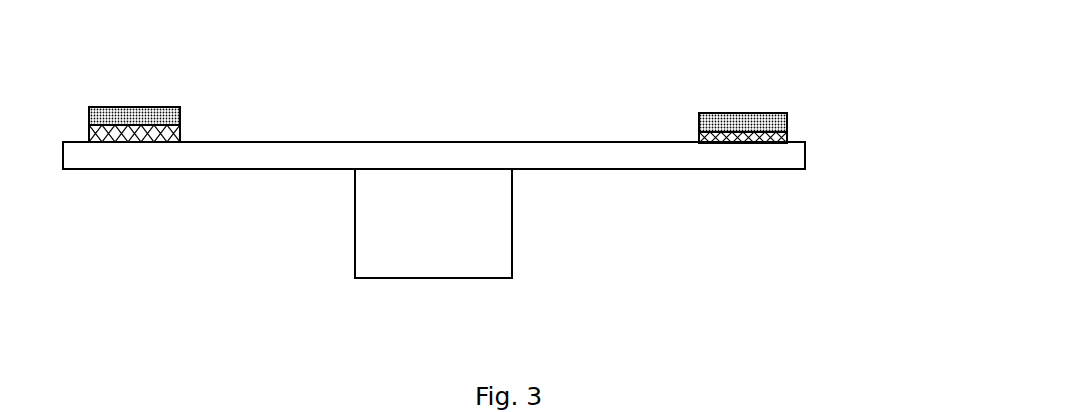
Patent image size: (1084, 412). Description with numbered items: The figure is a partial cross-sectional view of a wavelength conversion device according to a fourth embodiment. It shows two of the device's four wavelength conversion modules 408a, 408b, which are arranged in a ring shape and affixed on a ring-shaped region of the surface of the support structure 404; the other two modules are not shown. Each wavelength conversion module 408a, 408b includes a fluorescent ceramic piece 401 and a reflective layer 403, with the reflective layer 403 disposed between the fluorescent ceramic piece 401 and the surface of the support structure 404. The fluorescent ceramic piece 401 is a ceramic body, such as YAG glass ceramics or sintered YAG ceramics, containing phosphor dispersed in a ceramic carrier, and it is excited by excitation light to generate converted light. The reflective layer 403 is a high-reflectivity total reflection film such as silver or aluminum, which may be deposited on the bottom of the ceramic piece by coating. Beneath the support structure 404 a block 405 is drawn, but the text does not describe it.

The support structure 404 is at (633, 157).
The support / pedestal 405 is at (465, 263).
The wavelength conversion module 408a is at (181, 124).
The wavelength conversion module 408b is at (817, 82).
The fluorescent ceramic piece 401 is at (733, 123).
The reflective layer 403 is at (777, 118).